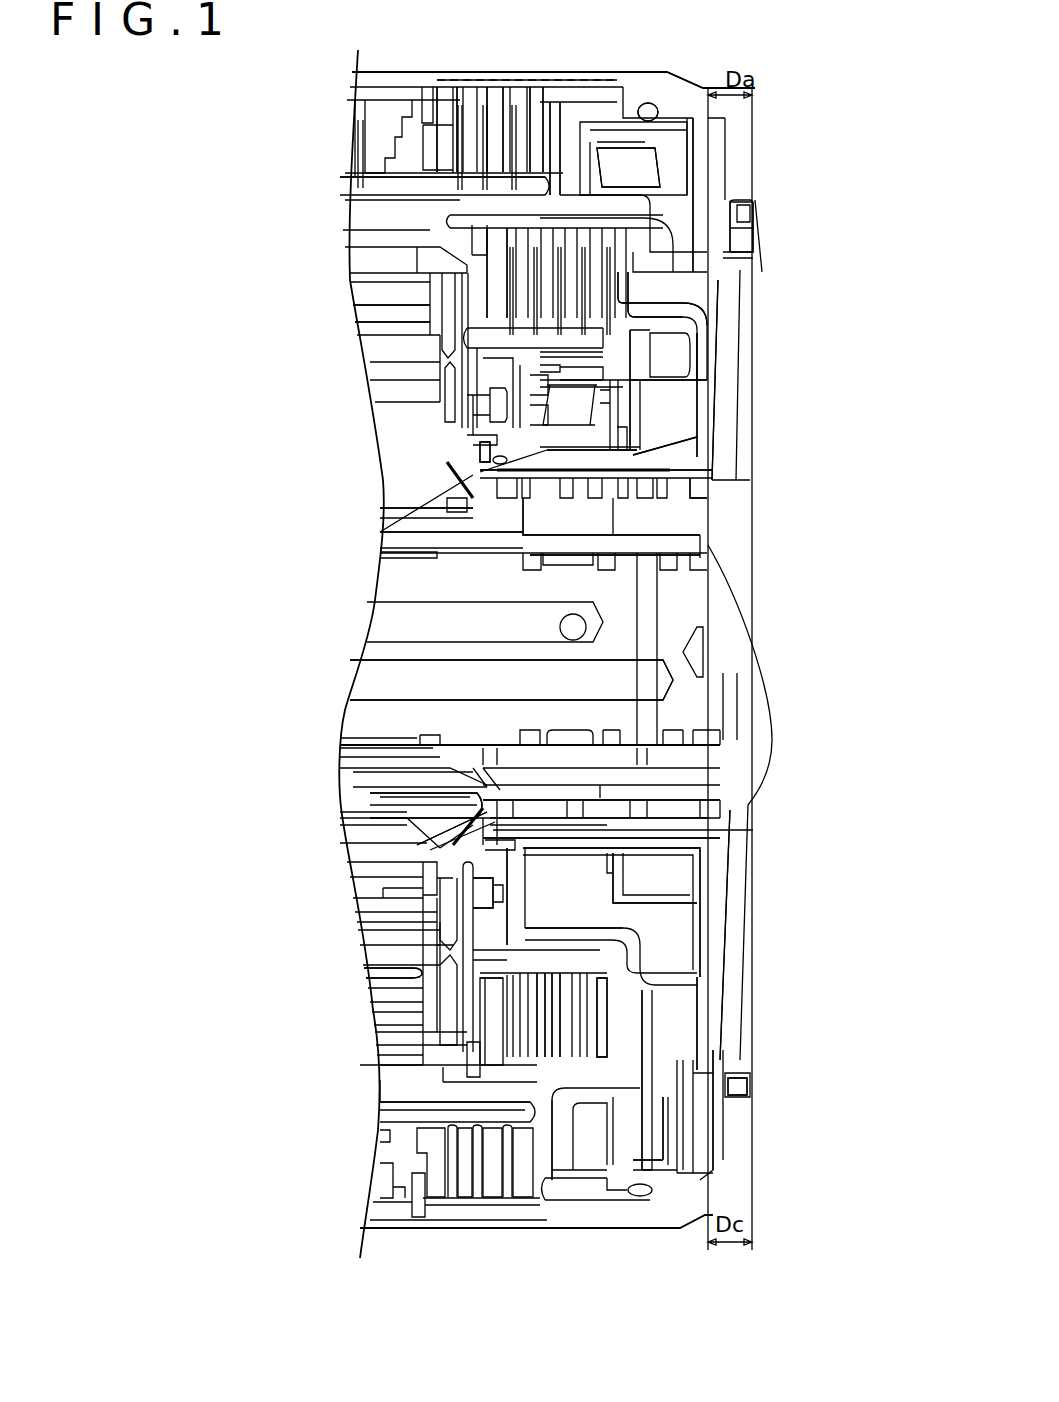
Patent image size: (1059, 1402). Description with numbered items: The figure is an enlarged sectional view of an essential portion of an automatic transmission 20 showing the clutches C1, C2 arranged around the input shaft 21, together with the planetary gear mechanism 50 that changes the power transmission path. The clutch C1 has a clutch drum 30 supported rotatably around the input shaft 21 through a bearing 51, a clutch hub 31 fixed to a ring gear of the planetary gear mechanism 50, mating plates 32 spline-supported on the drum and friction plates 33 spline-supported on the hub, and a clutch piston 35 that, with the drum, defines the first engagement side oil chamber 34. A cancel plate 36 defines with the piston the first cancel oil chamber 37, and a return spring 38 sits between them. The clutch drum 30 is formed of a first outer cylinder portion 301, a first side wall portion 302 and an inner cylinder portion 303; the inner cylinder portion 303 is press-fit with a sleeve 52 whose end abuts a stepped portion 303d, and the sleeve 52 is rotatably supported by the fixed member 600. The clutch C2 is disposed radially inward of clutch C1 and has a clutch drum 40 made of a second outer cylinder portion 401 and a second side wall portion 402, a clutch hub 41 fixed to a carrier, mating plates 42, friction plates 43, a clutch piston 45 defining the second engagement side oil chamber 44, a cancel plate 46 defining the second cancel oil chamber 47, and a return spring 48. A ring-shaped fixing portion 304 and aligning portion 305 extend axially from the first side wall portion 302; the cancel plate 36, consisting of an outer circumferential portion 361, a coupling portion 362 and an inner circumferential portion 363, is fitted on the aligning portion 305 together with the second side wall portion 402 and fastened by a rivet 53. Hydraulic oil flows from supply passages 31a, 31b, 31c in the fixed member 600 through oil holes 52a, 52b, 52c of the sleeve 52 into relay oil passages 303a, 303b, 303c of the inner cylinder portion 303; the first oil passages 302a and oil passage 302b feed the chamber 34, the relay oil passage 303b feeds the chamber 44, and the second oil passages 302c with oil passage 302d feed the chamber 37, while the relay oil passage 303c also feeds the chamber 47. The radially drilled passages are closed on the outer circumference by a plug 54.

The automatic transmission 20 is at (724, 58).
The input shaft 21 is at (672, 614).
The clutch drum 30 is at (657, 68).
The first outer cylinder portion 301 is at (402, 77).
The first side wall portion 302 is at (716, 168).
The first oil passage 302a is at (705, 420).
The oil passage 302b is at (745, 225).
The second oil passage 302c is at (705, 980).
The oil passage 302d is at (707, 1010).
The inner cylinder portion 303 is at (487, 460).
The relay oil passage 303a is at (700, 465).
The relay oil passage 303b is at (665, 448).
The relay oil passage 303c is at (460, 850).
The stepped portion 303d is at (460, 468).
The fixing portion 304 is at (665, 290).
The aligning portion 305 is at (690, 320).
The clutch hub 31 is at (420, 188).
The supply passage 31a is at (705, 515).
The supply passage 31b is at (668, 532).
The supply passage 31c is at (690, 803).
The clutch plates (mating plates) 32 is at (530, 107).
The clutch plates (friction plates) 33 is at (500, 107).
The first engagement side oil chamber 34 is at (703, 1070).
The clutch piston 35 is at (610, 107).
The cancel plate 36 is at (577, 107).
The outer circumferential portion 361 is at (565, 1135).
The coupling portion 362 is at (617, 1090).
The inner circumferential portion 363 is at (655, 1140).
The first cancel oil chamber 37 is at (657, 1140).
The return spring 38 is at (660, 112).
The clutch drum 40 is at (277, 1045).
The second outer cylinder portion 401 is at (537, 1070).
The second side wall portion 402 is at (630, 1045).
The clutch hub 41 is at (543, 967).
The clutch plates (mating plates) 42 is at (543, 1003).
The clutch plates (friction plates) 43 is at (563, 1023).
The second engagement side oil chamber 44 is at (680, 890).
The clutch piston 45 is at (693, 957).
The cancel plate 46 is at (473, 895).
The second cancel oil chamber 47 is at (572, 908).
The return spring 48 is at (700, 385).
The planetary gear mechanism 50 is at (378, 293).
The bearing 51 is at (500, 785).
The sleeve 52 is at (473, 492).
The oil hole 52a is at (712, 490).
The oil hole 52b is at (480, 525).
The oil hole 52c is at (700, 834).
The rivet 53 is at (687, 277).
The plug (lid element) 54 is at (750, 1085).
The fixed member (fixed shaft) 600 is at (738, 795).
The clutch C1 is at (409, 136).
The clutch C2 is at (437, 220).